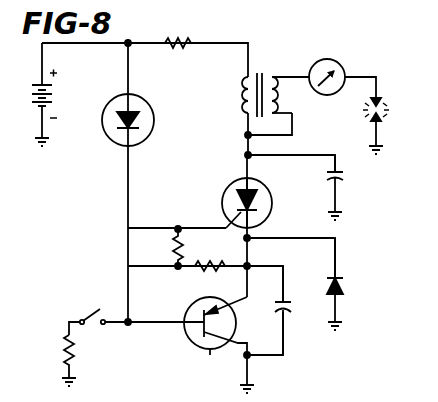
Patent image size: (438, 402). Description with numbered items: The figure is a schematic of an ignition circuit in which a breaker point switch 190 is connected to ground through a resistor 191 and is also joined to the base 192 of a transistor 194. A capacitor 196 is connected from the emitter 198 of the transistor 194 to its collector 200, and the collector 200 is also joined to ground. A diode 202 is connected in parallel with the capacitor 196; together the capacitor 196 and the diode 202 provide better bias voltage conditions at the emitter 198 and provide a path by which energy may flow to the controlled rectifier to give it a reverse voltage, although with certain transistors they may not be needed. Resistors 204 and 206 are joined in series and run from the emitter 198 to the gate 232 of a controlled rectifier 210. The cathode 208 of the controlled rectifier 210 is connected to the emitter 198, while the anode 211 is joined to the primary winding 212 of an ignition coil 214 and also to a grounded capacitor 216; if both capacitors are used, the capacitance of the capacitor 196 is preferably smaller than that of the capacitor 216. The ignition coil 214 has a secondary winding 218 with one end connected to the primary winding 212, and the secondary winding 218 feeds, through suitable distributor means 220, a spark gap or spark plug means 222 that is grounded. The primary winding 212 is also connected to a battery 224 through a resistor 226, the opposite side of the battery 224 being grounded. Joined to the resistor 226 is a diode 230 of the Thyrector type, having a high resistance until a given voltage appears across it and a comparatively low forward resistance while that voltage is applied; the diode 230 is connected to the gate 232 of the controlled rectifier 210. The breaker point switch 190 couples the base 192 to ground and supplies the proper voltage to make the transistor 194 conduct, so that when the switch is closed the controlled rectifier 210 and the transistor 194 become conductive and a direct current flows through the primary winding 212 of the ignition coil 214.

The breaker point switch 190 is at (90, 311).
The resistor 191 is at (62, 352).
The base 192 is at (188, 313).
The transistor 194 is at (192, 341).
The capacitor 196 is at (296, 307).
The emitter 198 is at (210, 310).
The collector 200 is at (212, 347).
The diode 202 is at (347, 291).
The resistor 204 is at (172, 249).
The resistor 206 is at (209, 251).
The cathode 208 is at (267, 221).
The controlled rectifier 210 is at (230, 186).
The anode 211 is at (262, 186).
The primary winding 212 is at (246, 97).
The ignition coil 214 is at (268, 67).
The capacitor 216 is at (348, 182).
The secondary winding 218 is at (278, 100).
The distributor means 220 is at (338, 65).
The spark plug means 222 is at (398, 101).
The battery 224 is at (58, 92).
The resistor 226 is at (186, 40).
The diode 230 is at (105, 133).
The gate 232 is at (222, 201).